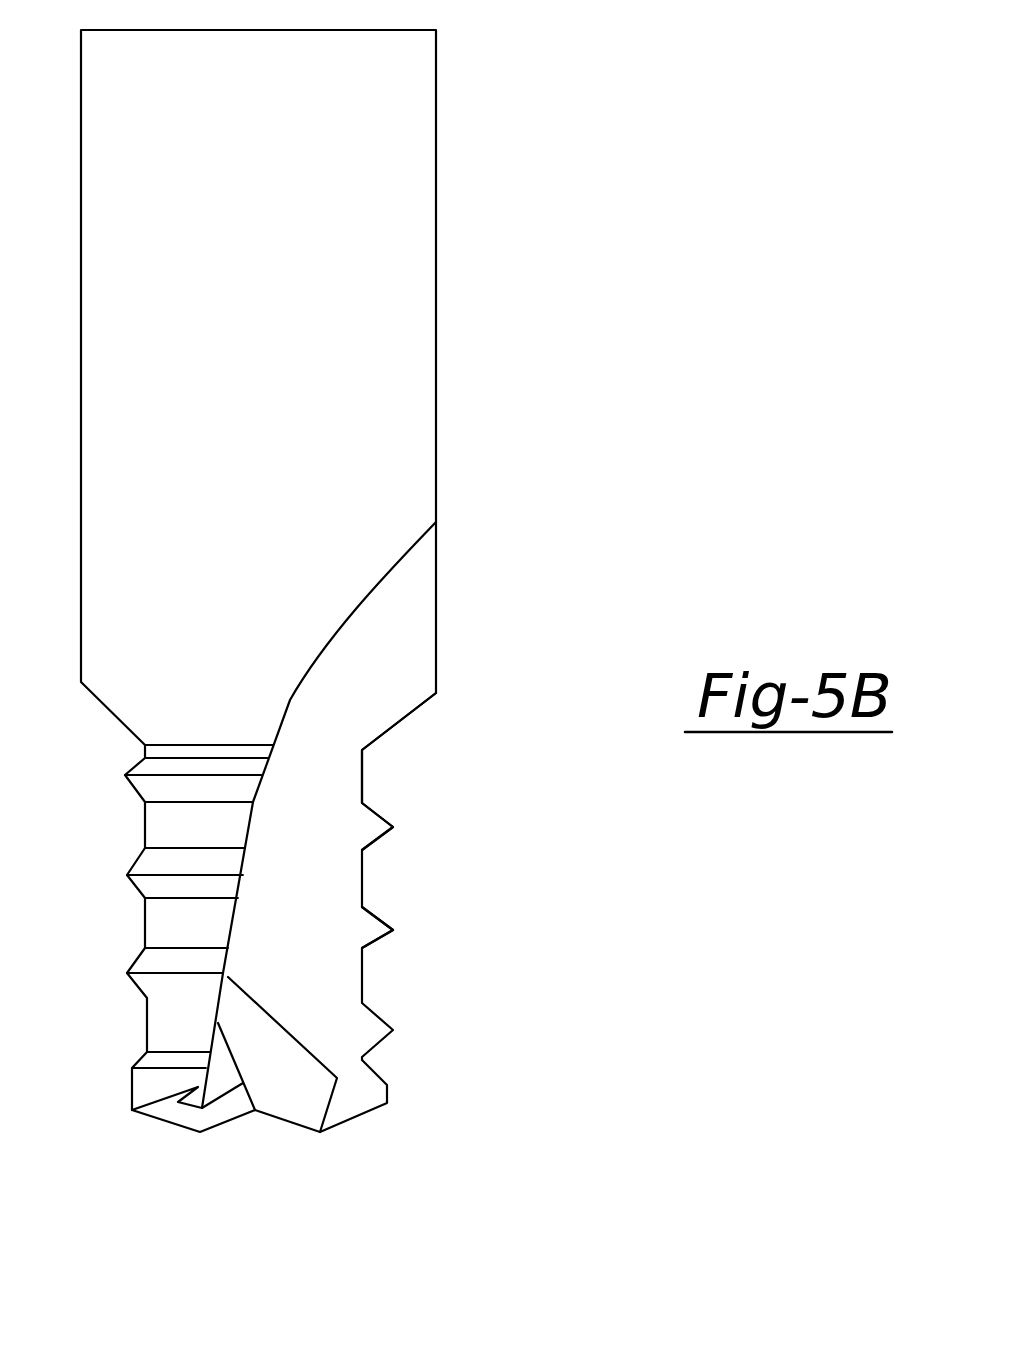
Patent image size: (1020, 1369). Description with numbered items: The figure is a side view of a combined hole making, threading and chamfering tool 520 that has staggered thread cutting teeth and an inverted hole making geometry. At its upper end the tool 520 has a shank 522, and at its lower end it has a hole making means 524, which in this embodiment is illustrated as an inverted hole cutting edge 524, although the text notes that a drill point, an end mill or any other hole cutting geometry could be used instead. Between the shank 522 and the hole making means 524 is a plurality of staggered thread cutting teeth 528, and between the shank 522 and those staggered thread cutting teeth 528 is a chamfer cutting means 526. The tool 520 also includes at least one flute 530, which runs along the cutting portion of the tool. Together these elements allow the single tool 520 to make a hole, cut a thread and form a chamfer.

The combined hole making, threading and chamfering tool 520 is at (478, 263).
The shank 522 is at (288, 392).
The hole making means 524 is at (320, 1132).
The chamfer cutting means 526 is at (408, 720).
The staggered thread cutting teeth 528 is at (377, 842).
The flute 530 is at (323, 925).